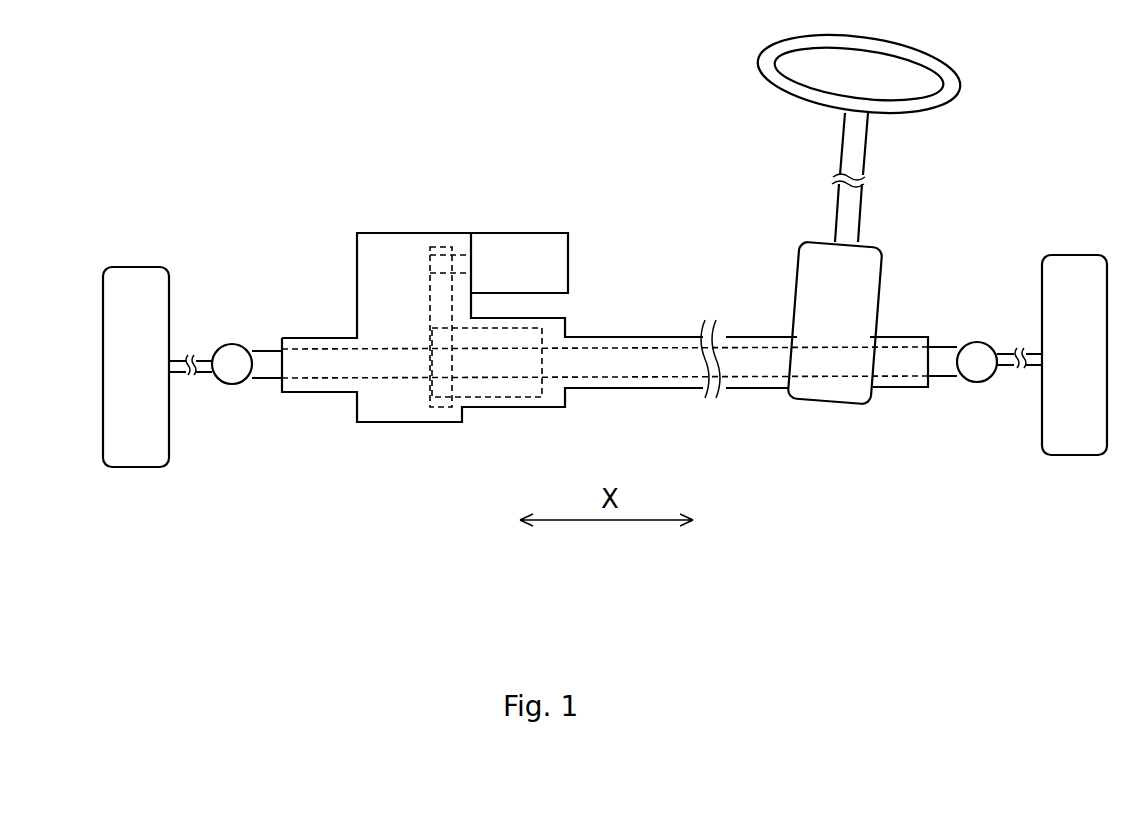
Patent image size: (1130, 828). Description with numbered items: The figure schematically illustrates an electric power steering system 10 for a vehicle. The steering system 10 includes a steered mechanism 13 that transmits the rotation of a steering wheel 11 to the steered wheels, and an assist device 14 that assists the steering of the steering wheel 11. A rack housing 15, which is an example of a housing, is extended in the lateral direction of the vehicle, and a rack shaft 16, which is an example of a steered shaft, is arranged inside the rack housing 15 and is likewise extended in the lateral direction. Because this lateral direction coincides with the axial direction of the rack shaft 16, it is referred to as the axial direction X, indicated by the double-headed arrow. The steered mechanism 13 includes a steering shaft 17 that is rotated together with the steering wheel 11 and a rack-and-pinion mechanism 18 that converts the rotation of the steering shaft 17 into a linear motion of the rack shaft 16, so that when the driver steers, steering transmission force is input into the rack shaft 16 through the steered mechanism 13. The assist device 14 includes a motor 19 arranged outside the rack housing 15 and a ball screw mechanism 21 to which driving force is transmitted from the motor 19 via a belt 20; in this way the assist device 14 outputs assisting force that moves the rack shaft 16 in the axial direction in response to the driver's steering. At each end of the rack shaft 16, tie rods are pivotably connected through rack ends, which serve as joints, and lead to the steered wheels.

The electric power steering system 10 is at (968, 194).
The steering wheel 11 is at (915, 43).
The steered mechanism 13 is at (803, 200).
The assist device 14 is at (484, 203).
The rack housing 15 is at (602, 390).
The rack shaft 16 is at (657, 380).
The steering shaft 17 is at (850, 210).
The rack-and-pinion mechanism 18 is at (870, 272).
The motor 19 is at (525, 237).
The belt 20 is at (430, 291).
The ball screw mechanism 21 is at (516, 411).